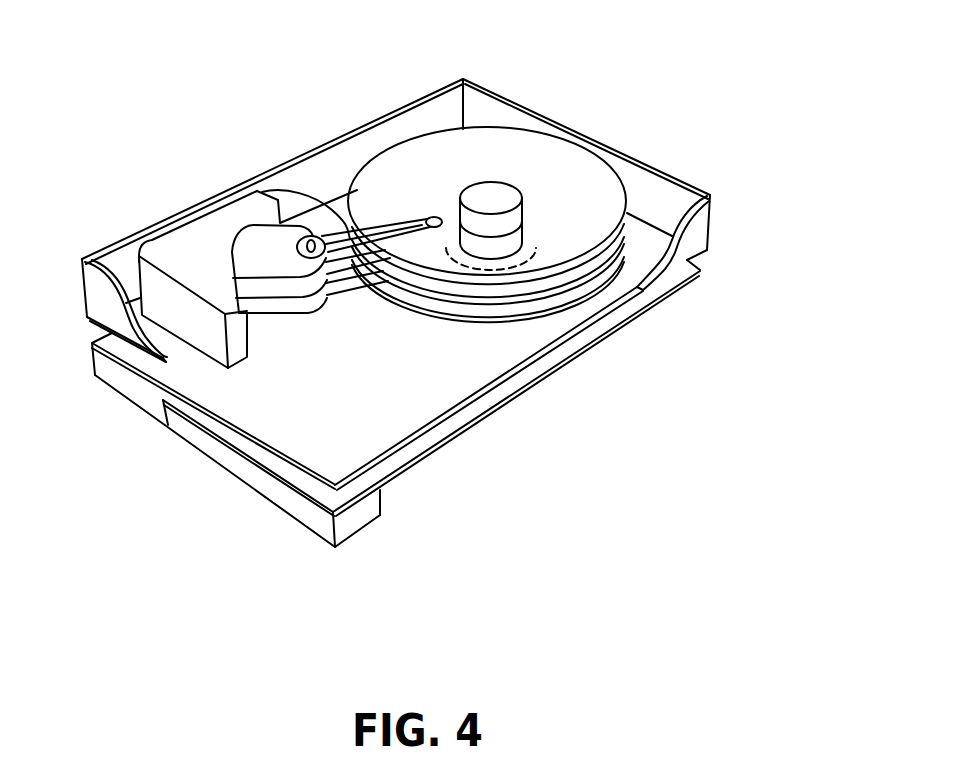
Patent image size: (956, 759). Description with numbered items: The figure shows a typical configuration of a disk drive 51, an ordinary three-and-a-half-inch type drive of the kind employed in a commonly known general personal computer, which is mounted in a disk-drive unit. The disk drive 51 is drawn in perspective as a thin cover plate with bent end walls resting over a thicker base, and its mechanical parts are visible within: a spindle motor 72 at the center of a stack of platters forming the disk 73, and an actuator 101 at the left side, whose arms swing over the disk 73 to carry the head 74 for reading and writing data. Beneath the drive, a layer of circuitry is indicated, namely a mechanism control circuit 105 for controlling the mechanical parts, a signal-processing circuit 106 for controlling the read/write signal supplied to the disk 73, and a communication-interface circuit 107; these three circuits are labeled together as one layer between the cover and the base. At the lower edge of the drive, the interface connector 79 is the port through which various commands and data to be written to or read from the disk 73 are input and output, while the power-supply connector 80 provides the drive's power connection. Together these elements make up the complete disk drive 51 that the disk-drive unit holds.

The disk drive 51 is at (142, 230).
The spindle motor 72 is at (535, 197).
The disk 73 is at (515, 150).
The head 74 is at (433, 214).
The interface connector 79 is at (318, 518).
The power-supply connector 80 is at (125, 378).
The actuator 101 is at (265, 192).
The mechanism control circuit 105 is at (573, 345).
The signal-processing circuit 106 is at (516, 386).
The communication-interface circuit 107 is at (517, 396).